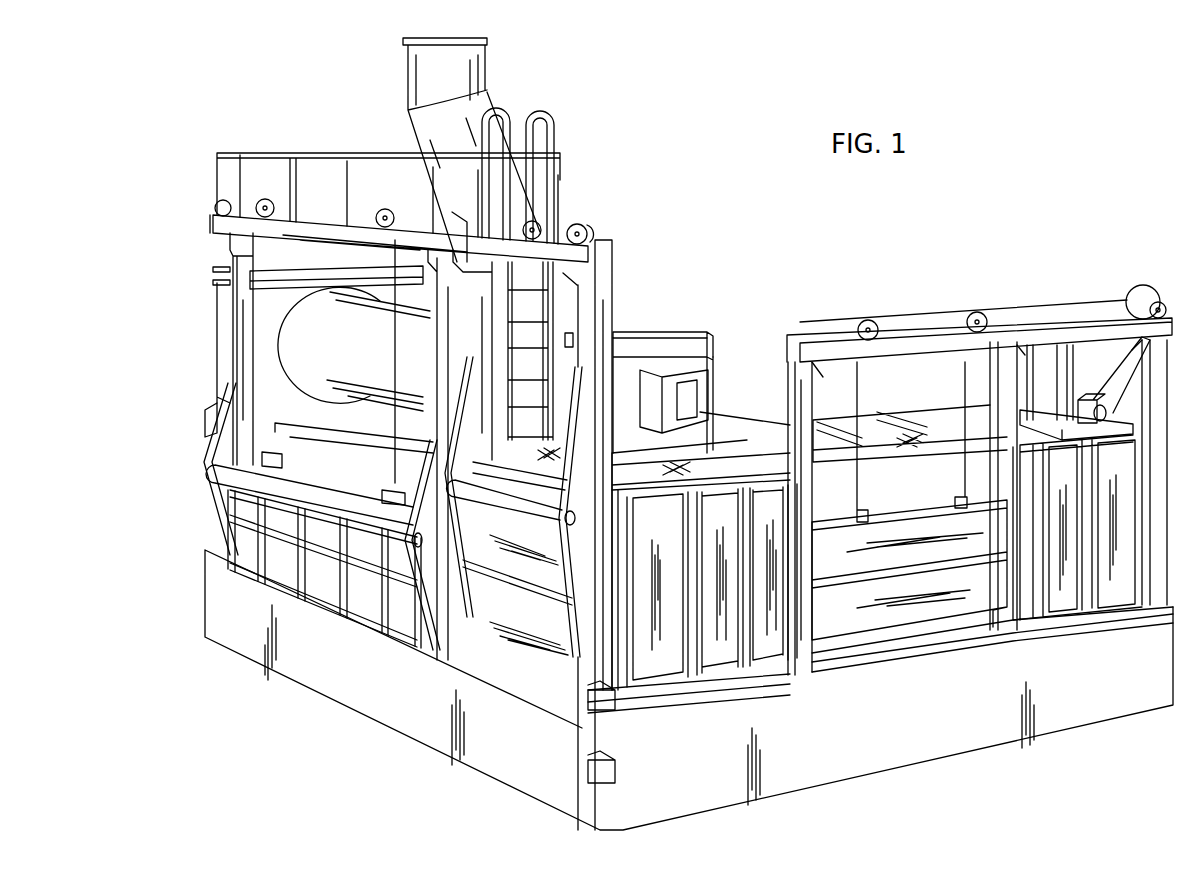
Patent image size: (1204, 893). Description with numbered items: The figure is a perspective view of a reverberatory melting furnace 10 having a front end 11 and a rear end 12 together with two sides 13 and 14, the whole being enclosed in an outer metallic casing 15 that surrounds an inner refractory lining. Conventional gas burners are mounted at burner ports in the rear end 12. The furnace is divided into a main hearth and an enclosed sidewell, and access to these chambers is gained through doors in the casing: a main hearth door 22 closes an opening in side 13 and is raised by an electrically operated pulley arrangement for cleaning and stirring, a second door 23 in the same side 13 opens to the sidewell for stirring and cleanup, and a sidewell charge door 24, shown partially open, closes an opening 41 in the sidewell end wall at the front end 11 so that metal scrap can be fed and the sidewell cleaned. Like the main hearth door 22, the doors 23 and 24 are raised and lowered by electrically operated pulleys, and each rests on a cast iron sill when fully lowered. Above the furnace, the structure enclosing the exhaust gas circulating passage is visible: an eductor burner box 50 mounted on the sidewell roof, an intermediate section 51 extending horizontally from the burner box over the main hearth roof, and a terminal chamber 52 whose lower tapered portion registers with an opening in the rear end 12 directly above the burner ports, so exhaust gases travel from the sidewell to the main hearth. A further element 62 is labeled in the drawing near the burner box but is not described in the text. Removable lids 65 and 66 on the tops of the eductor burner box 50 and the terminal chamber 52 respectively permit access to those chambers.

The reverberatory furnace 10 is at (186, 431).
The front end 11 is at (1122, 562).
The rear end 12 is at (215, 342).
The side 13 is at (222, 511).
The side 14 is at (746, 413).
The outer metallic casing 15 is at (723, 658).
The main hearth door 22 is at (285, 570).
The door 23 is at (515, 668).
The sidewell charge door 24 is at (880, 623).
The opening 41 is at (942, 628).
The eductor burner box 50 is at (708, 365).
The intermediate section 51 is at (327, 377).
The terminal chamber 52 is at (218, 310).
The housing 62 is at (660, 360).
The removable lid 65 is at (633, 333).
The removable lid 66 is at (330, 268).